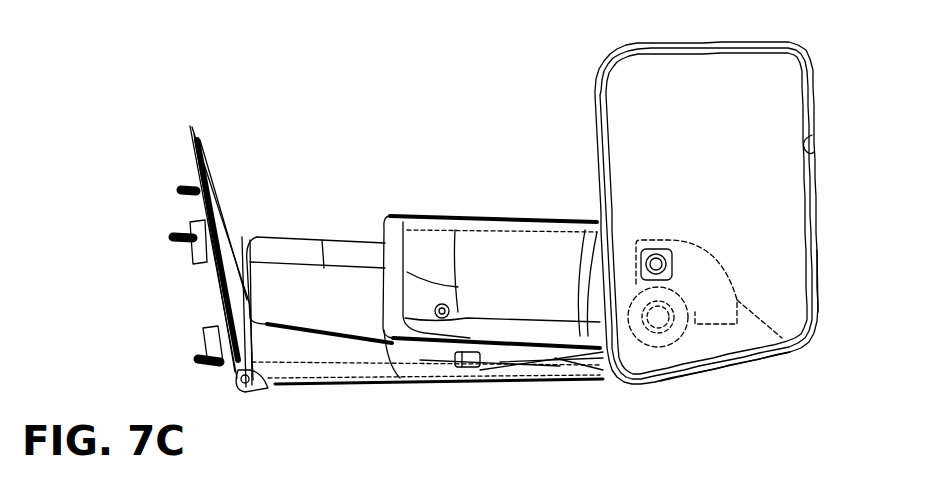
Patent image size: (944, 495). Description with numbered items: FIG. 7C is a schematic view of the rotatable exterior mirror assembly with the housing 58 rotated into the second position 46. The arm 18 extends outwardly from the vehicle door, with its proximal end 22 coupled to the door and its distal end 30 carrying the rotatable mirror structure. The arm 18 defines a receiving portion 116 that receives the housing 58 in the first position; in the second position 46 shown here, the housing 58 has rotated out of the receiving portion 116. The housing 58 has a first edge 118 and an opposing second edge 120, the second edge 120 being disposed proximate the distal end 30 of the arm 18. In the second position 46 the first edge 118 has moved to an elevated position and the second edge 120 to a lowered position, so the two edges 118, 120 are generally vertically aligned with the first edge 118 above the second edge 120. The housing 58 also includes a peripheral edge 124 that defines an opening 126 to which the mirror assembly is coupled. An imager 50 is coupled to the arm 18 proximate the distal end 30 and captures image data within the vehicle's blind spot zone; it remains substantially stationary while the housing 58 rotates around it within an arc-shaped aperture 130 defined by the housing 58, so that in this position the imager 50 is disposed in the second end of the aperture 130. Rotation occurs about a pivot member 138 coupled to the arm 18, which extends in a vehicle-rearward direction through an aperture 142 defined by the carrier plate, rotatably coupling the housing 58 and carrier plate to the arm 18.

The arm 18 is at (323, 257).
The proximal end 22 is at (283, 271).
The distal end 30 is at (580, 360).
The second position 46 is at (821, 315).
The imager 50 is at (655, 261).
The housing 58 is at (822, 232).
The receiving portion 116 is at (425, 343).
The first edge 118 is at (731, 43).
The second edge 120 is at (720, 374).
The peripheral edge 124 is at (810, 86).
The opening 126 is at (816, 152).
The aperture 130 is at (782, 338).
The pivot member 138 is at (648, 322).
The aperture 142 is at (666, 352).